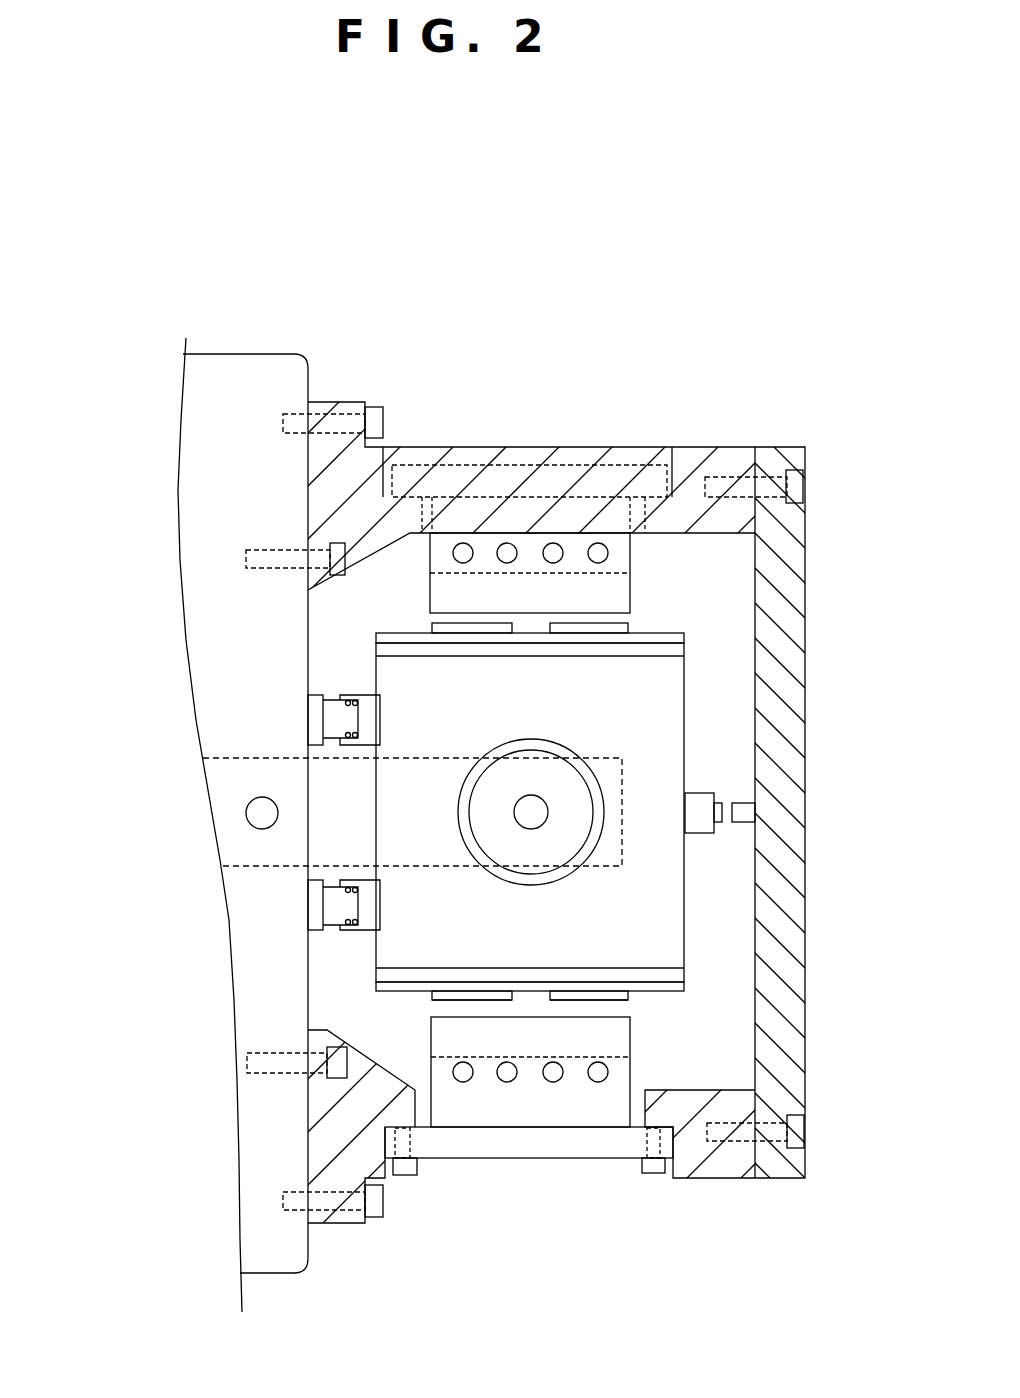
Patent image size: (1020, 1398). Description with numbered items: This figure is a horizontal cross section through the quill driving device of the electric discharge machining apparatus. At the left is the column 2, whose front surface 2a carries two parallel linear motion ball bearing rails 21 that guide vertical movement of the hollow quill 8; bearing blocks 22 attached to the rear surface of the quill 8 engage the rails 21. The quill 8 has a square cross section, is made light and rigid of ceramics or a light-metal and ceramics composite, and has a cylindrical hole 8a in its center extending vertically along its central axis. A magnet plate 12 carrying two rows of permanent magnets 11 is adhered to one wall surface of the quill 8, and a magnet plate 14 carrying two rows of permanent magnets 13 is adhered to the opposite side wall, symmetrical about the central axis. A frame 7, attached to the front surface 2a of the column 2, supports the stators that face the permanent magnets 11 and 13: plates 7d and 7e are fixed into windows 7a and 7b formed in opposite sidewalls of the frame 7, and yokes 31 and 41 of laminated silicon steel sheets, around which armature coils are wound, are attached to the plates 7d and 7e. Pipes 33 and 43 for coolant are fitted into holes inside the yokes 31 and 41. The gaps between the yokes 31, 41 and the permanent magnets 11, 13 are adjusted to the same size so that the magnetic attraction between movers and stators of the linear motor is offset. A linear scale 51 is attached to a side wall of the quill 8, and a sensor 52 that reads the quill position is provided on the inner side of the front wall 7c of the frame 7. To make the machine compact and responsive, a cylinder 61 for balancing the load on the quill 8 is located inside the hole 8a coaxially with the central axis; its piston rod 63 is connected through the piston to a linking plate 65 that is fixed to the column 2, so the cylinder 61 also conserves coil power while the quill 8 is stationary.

The column 2 is at (223, 382).
The front surface of column 2a is at (312, 372).
The frame 7 is at (485, 455).
The window 7a is at (645, 1108).
The window 7b is at (647, 523).
The front wall of frame 7c is at (792, 522).
The plate 7d is at (502, 1150).
The plate 7e is at (512, 482).
The quill 8 is at (660, 707).
The cylindrical hole 8a is at (567, 877).
The permanent magnets 11 is at (443, 990).
The magnet plate 12 is at (680, 975).
The permanent magnets 13 is at (443, 633).
The magnet plate 14 is at (688, 647).
The linear motion ball bearing rails 21 is at (337, 722).
The upper bearing block 22 is at (372, 707).
The yoke 31 is at (575, 1037).
The pipes 33 is at (553, 1075).
The yoke 41 is at (449, 590).
The pipes 43 is at (558, 550).
The linear scale 51 is at (715, 840).
The sensor 52 is at (750, 813).
The cylinder 61 is at (593, 785).
The piston rod 63 is at (537, 815).
The linking plate 65 is at (342, 787).